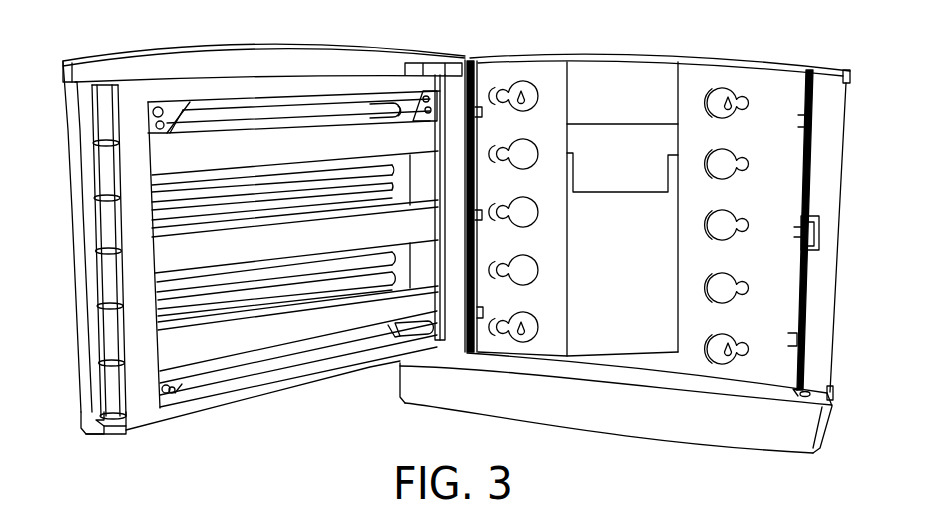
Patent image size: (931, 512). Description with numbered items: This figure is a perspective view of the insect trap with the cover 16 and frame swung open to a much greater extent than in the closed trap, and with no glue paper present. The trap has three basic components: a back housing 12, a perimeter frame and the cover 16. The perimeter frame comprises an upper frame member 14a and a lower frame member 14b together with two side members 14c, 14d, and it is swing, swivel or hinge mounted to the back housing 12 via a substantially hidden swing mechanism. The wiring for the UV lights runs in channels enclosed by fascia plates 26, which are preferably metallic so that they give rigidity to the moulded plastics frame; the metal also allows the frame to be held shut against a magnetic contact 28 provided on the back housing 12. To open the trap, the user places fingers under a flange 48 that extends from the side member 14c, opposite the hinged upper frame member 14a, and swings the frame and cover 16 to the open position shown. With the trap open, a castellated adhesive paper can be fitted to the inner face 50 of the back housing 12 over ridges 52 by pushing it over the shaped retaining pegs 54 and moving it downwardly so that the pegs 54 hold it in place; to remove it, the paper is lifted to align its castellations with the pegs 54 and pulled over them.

The back housing 12 is at (757, 440).
The upper frame member 14a is at (280, 113).
The lower frame member 14b is at (250, 373).
The side member 14c is at (157, 288).
The side member 14d is at (453, 177).
The cover 16 is at (342, 180).
The fascia plates 26 is at (140, 338).
The magnetic contact 28 is at (814, 230).
The flange 48 is at (100, 114).
The inner face 50 is at (640, 224).
The ridges 52 is at (577, 350).
The retaining pegs 54 is at (802, 328).